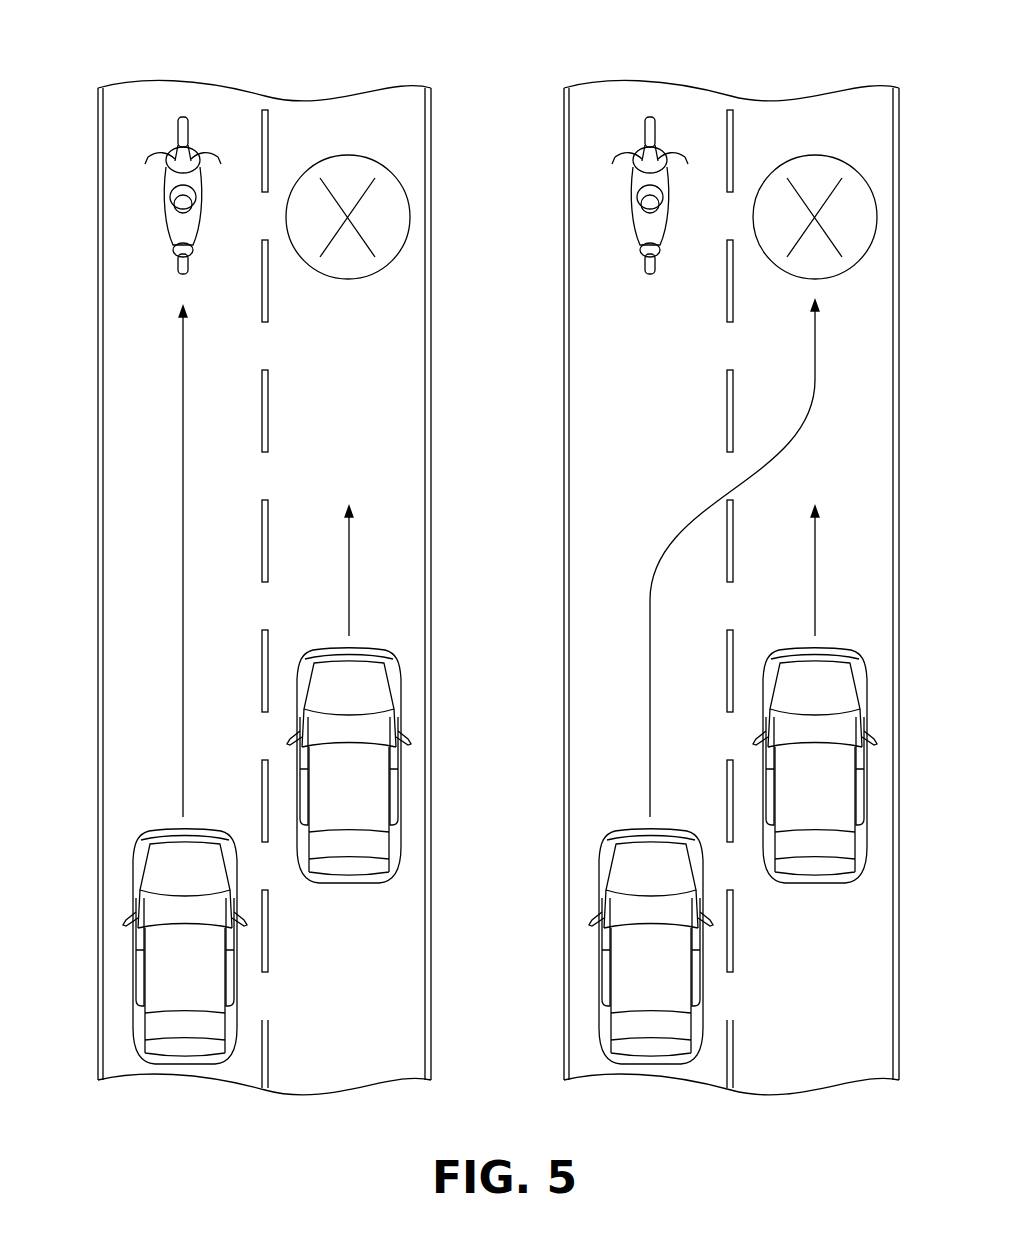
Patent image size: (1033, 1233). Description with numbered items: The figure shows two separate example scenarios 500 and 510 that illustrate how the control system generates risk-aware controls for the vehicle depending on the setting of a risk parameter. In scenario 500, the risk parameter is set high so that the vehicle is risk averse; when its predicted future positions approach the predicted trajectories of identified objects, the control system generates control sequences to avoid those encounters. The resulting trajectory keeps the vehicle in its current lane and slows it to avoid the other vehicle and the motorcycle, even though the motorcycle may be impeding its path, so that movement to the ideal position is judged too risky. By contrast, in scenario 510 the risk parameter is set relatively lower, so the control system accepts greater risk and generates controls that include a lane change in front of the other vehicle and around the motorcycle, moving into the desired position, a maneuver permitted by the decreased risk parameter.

The scenario 500 is at (355, 82).
The scenario 510 is at (823, 82).